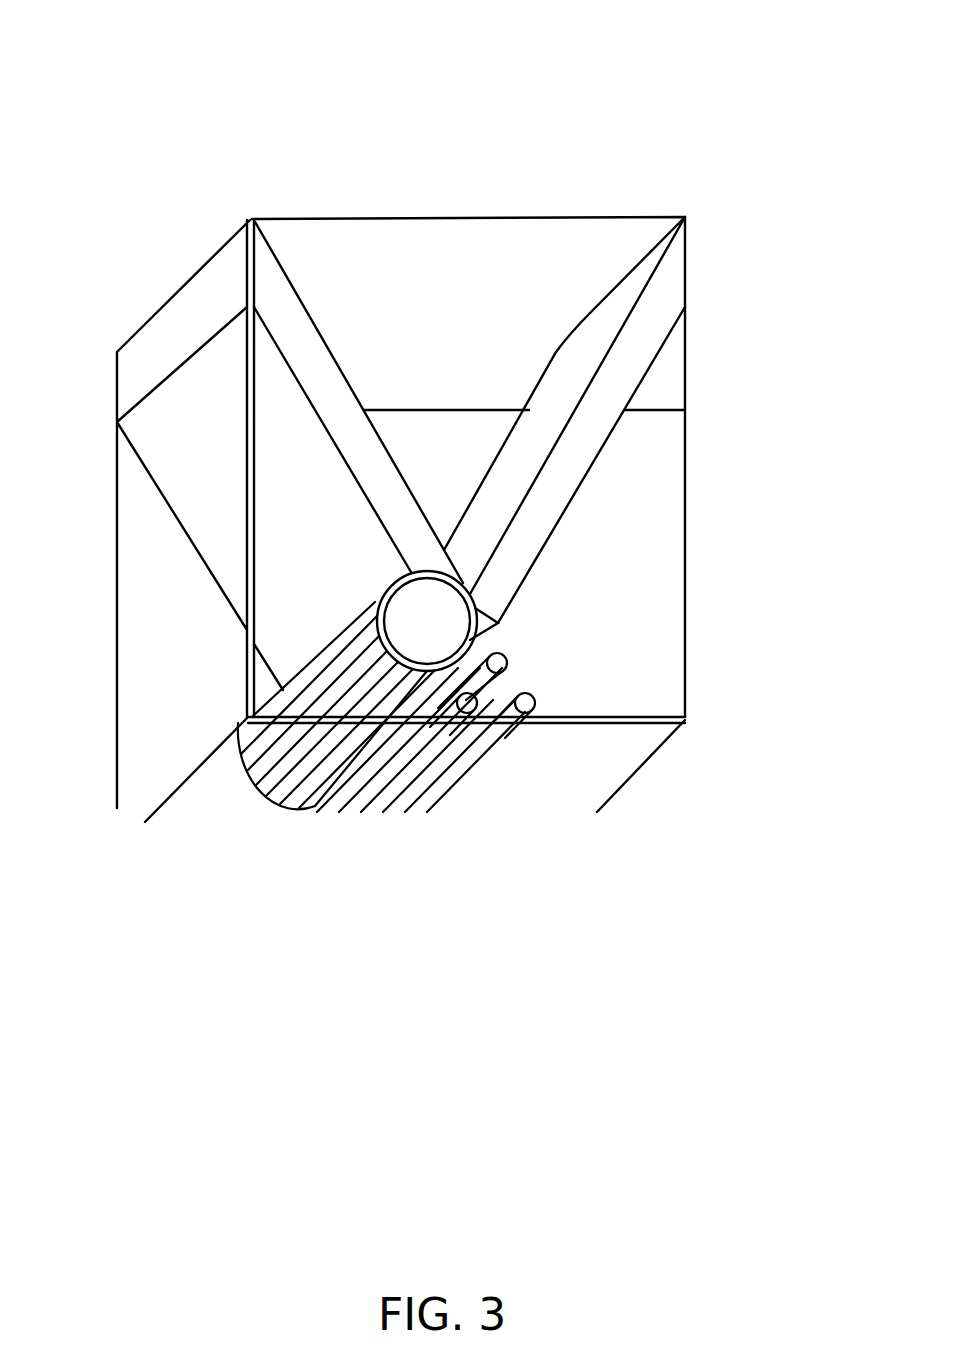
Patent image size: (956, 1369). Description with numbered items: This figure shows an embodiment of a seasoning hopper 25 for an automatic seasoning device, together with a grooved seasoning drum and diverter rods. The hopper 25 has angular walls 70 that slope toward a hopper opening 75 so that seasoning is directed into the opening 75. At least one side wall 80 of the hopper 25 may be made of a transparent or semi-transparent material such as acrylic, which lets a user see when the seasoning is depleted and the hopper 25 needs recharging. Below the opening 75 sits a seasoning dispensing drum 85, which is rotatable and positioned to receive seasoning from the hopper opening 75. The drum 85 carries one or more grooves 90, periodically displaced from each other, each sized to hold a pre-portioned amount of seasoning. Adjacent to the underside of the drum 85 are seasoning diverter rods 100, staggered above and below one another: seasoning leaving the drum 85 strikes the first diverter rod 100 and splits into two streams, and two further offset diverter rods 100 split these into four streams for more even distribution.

The seasoning hopper 25 is at (652, 54).
The angular wall 70 is at (570, 373).
The hopper opening 75 is at (465, 585).
The side wall 80 is at (400, 247).
The seasoning dispensing drum 85 is at (400, 613).
The groove 90 is at (268, 785).
The seasoning diverter rod 100 is at (458, 787).